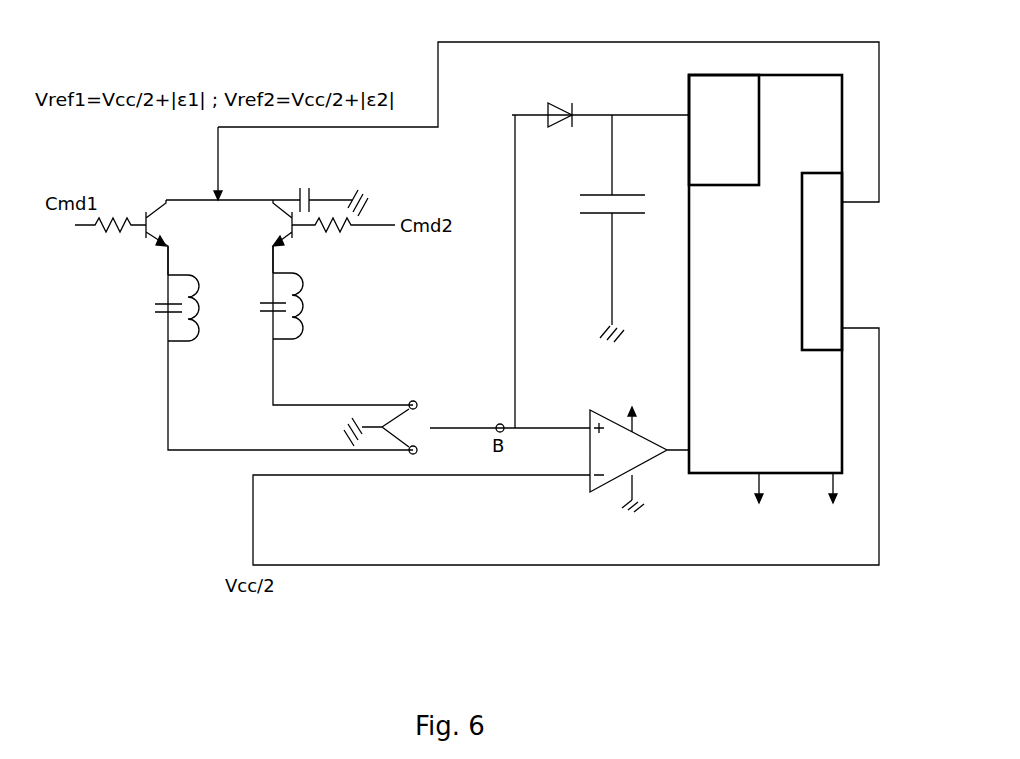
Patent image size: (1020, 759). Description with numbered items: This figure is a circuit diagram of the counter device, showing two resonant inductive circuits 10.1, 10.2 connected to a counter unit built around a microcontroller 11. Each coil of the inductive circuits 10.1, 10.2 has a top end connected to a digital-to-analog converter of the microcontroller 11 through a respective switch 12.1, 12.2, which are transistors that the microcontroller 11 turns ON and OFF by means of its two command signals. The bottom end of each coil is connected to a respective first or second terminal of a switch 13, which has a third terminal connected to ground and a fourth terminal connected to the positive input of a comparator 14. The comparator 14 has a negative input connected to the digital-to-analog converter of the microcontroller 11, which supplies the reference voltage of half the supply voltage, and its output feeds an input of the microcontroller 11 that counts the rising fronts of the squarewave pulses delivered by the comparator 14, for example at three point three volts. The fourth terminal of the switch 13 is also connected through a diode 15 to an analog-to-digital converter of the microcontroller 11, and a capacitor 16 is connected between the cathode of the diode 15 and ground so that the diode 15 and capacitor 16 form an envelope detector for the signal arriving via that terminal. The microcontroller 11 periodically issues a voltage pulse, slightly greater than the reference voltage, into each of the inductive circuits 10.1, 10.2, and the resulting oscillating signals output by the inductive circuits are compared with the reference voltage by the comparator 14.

The switch 12.1 is at (147, 216).
The switch 12.2 is at (291, 216).
The resonant inductive circuit 10.1 is at (150, 356).
The resonant inductive circuit 10.2 is at (326, 340).
The switch 13 is at (418, 430).
The comparator 14 is at (590, 493).
The diode 15 is at (557, 126).
The capacitor 16 is at (625, 195).
The microcontroller 11 is at (712, 474).